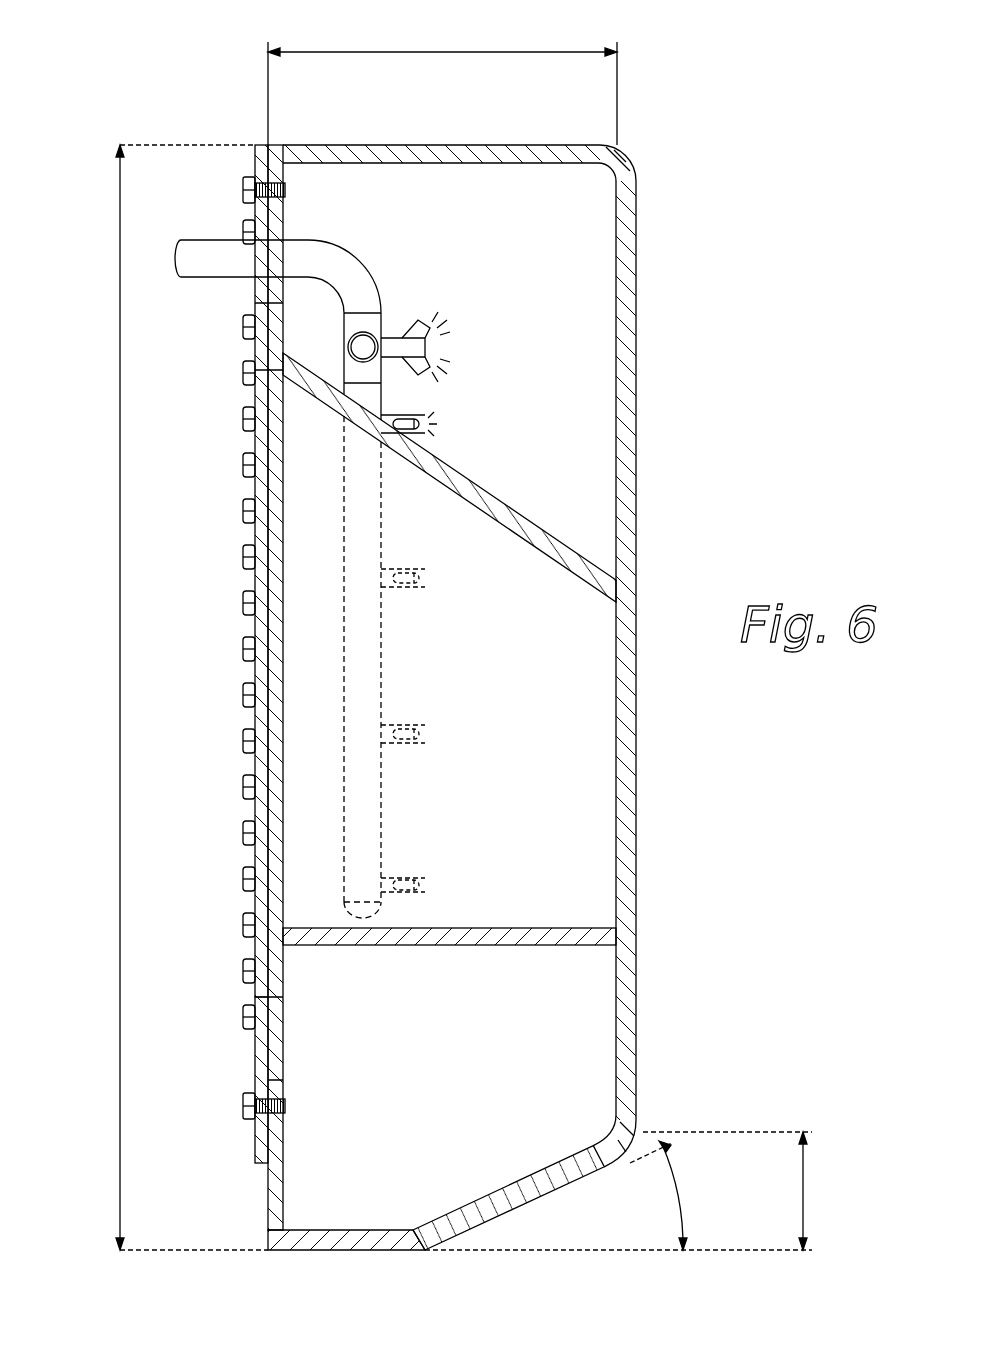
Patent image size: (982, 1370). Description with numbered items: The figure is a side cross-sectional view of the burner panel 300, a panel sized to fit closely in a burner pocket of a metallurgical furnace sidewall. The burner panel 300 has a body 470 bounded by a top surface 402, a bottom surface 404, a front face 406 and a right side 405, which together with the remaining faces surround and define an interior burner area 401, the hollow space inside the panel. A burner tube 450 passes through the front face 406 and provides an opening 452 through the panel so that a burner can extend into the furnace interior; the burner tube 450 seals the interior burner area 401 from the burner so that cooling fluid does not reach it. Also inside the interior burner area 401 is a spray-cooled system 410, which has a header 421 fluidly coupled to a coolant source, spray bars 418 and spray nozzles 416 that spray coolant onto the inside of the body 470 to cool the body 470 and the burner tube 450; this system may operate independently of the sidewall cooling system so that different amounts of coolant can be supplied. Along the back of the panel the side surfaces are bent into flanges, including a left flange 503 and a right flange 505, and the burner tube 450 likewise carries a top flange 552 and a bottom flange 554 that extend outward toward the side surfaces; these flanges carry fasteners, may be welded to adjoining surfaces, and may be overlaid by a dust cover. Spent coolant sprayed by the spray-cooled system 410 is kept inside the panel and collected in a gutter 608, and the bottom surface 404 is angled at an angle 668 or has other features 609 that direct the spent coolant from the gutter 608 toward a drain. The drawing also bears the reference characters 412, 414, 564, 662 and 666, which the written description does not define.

The burner panel 300 is at (158, 58).
The interior burner area 401 is at (573, 1030).
The top surface 402 is at (452, 145).
The bottom surface 404 is at (347, 1250).
The right side 405 is at (265, 487).
The front face 406 is at (636, 443).
The spray-cooled system 410 is at (347, 273).
The top plate 412 is at (347, 145).
The inclined baffle plate 414 is at (299, 240).
The spray nozzles 416 is at (393, 337).
The spray bars 418 is at (430, 348).
The header 421 is at (383, 838).
The burner tube 450 is at (526, 810).
The opening 452 is at (631, 773).
The body 470 is at (636, 306).
The left flange 503 is at (262, 210).
The right flange 505 is at (262, 948).
The top flange 552 is at (265, 312).
The bottom flange 554 is at (268, 990).
The housing height 564 is at (120, 680).
The gutter 608 is at (455, 1044).
The other features 609 is at (548, 1190).
The housing width 662 is at (452, 52).
The angled wall height 666 is at (803, 1188).
The angle 668 is at (683, 1193).